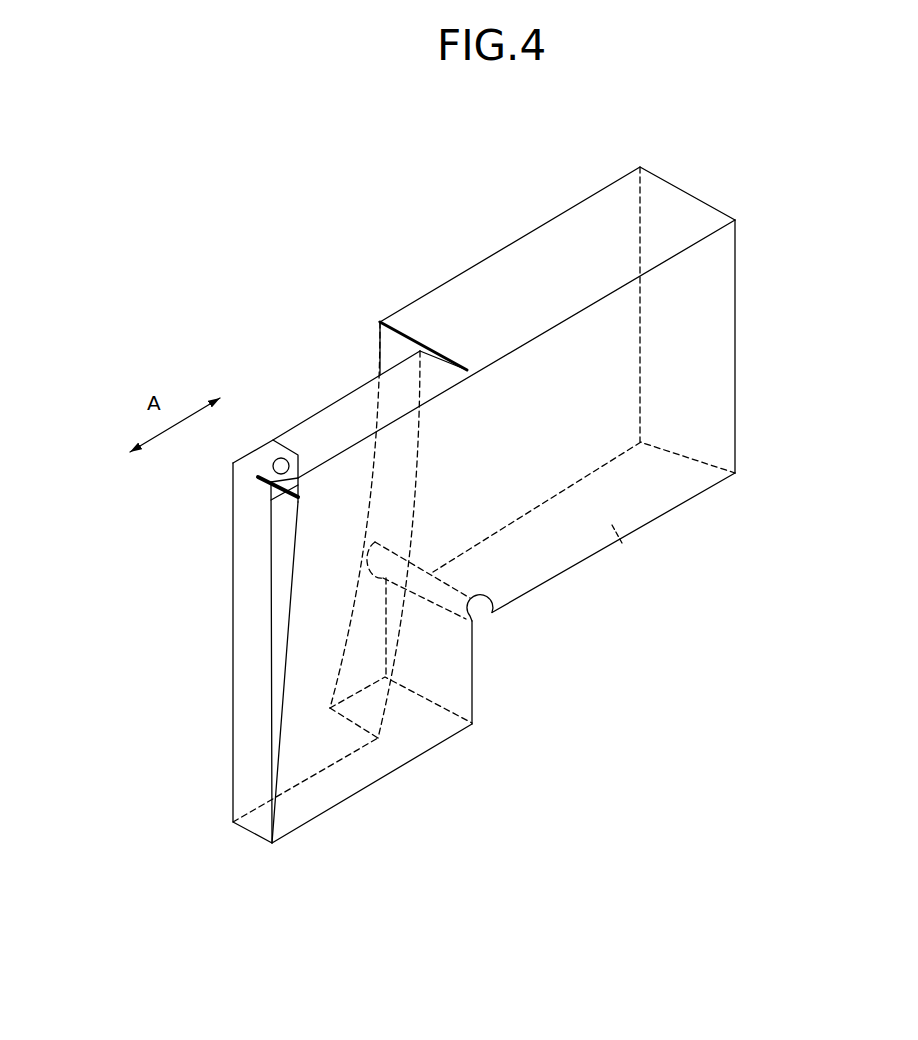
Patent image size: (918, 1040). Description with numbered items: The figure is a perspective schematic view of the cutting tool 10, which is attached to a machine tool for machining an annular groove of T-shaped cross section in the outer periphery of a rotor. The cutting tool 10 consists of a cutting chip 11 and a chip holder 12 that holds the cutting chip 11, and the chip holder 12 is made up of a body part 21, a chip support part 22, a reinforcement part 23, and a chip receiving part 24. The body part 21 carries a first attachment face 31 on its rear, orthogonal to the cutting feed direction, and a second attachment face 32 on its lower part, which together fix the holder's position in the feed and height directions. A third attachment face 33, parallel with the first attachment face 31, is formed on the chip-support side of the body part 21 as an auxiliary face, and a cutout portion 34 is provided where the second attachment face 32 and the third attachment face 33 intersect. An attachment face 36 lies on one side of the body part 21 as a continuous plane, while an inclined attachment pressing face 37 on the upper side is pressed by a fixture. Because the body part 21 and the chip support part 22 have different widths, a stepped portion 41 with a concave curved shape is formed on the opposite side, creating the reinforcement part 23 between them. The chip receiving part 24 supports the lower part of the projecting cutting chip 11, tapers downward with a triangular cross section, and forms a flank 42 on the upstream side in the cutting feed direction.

The cutting tool 10 is at (371, 182).
The cutting chip 11 is at (258, 480).
The chip holder 12 is at (486, 256).
The body part 21 is at (701, 193).
The chip support part 22 is at (304, 408).
The reinforcement part 23 is at (477, 668).
The chip receiving part 24 is at (270, 615).
The first attachment face 31 is at (738, 328).
The second attachment face 32 is at (627, 544).
The third attachment face 33 is at (473, 707).
The cutout portion 34 is at (476, 612).
The attachment face 36 is at (697, 355).
The attachment pressing face 37 is at (567, 240).
The stepped portion 41 is at (393, 350).
The flank 42 is at (280, 722).